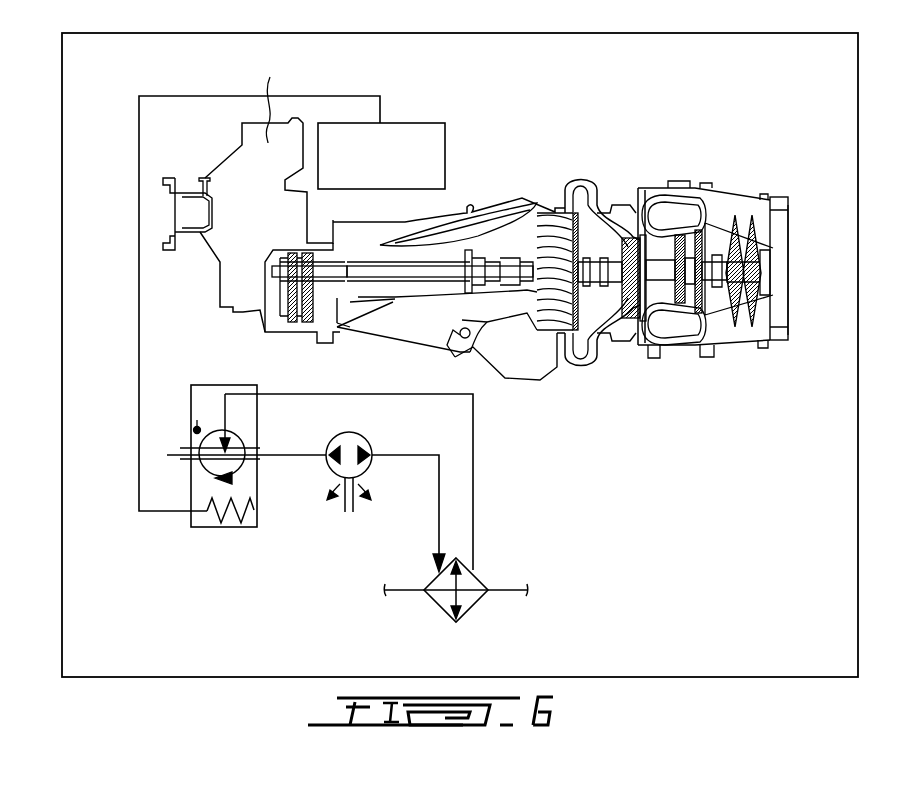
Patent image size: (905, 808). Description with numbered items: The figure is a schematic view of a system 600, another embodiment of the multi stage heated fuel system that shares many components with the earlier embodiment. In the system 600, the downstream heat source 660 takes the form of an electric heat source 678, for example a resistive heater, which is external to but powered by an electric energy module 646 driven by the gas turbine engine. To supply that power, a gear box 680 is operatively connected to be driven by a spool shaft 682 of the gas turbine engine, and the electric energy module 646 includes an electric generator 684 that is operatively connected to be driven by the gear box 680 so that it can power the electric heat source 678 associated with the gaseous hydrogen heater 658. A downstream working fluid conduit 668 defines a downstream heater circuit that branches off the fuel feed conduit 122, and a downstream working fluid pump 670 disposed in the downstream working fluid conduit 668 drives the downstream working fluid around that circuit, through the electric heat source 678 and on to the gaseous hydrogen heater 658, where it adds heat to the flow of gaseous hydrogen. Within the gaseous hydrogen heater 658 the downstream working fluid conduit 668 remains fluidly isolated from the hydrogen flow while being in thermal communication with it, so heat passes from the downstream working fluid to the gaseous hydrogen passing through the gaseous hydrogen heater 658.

The system 600 is at (745, 120).
The electric energy module 646 is at (405, 97).
The gaseous hydrogen heater 658 is at (478, 574).
The downstream heat source 660 is at (108, 463).
The downstream working fluid conduit 668 is at (473, 464).
The downstream working fluid pump 670 is at (328, 442).
The electric heat source 678 is at (205, 385).
The gear box 680 is at (235, 170).
The spool shaft 682 is at (328, 278).
The electric generator 684 is at (445, 156).
The fuel feed conduit 122 is at (405, 588).